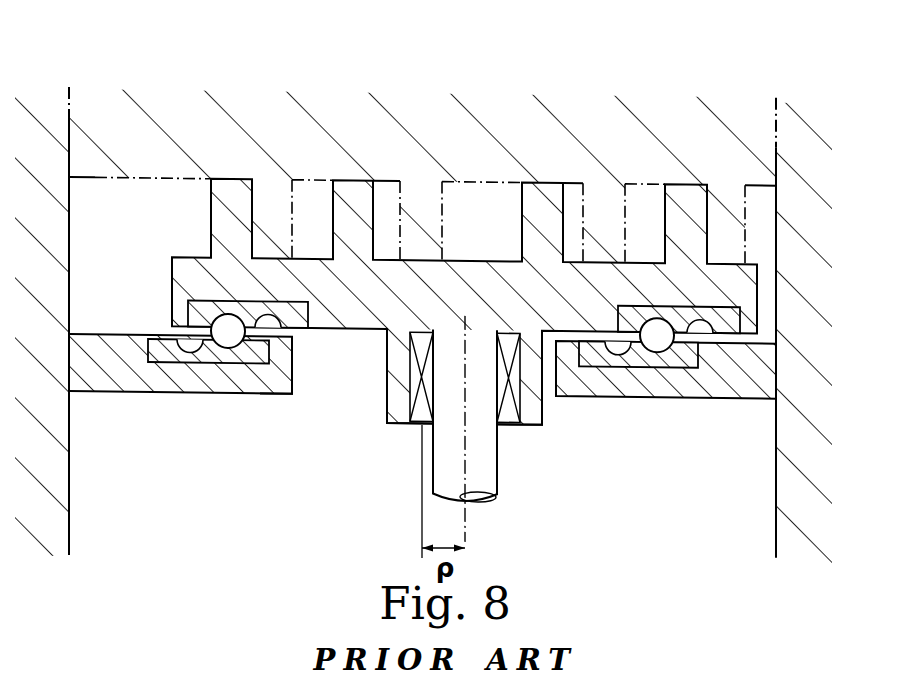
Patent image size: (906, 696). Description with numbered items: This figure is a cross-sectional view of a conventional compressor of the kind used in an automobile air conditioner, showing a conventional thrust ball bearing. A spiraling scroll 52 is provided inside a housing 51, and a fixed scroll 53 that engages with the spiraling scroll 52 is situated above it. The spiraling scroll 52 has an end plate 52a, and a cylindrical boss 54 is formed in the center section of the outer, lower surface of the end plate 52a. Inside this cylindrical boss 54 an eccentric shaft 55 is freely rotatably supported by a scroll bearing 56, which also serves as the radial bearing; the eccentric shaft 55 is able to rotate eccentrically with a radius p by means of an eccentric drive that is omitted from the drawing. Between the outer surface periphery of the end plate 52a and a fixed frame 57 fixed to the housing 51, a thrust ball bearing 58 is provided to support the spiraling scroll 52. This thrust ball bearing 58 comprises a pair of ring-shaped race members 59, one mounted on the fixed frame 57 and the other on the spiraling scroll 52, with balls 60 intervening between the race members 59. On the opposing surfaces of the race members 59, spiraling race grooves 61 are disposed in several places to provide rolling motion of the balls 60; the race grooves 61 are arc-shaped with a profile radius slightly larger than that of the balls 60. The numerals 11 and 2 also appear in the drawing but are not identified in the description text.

The fixed scroll 53 is at (325, 108).
The spiraling scroll 52 is at (489, 258).
The end plate 52a is at (414, 288).
The balls 60 is at (228, 330).
The race grooves 61 is at (180, 337).
The fixed frame 57 is at (103, 373).
The race members 59 is at (252, 352).
The thrust ball bearing 58 is at (306, 402).
The cylindrical boss 54 is at (540, 413).
The scroll bearing 56 is at (508, 421).
The eccentric shaft 55 is at (485, 478).
The outer race 11 is at (702, 323).
The base 2 is at (680, 388).
The housing 51 is at (778, 506).